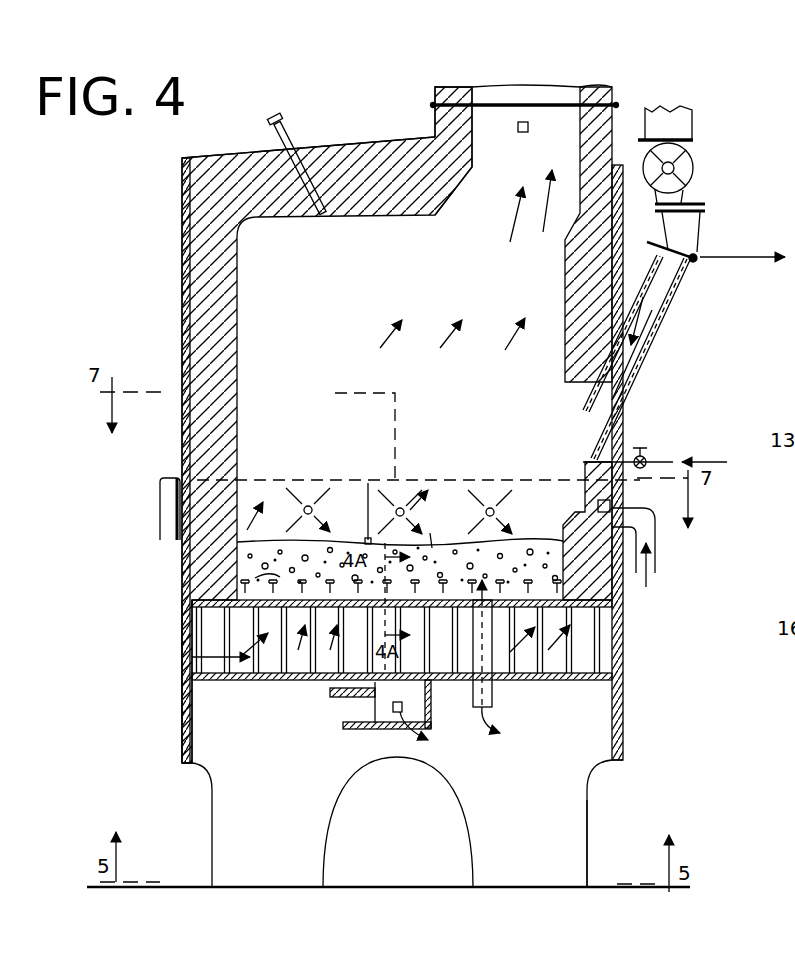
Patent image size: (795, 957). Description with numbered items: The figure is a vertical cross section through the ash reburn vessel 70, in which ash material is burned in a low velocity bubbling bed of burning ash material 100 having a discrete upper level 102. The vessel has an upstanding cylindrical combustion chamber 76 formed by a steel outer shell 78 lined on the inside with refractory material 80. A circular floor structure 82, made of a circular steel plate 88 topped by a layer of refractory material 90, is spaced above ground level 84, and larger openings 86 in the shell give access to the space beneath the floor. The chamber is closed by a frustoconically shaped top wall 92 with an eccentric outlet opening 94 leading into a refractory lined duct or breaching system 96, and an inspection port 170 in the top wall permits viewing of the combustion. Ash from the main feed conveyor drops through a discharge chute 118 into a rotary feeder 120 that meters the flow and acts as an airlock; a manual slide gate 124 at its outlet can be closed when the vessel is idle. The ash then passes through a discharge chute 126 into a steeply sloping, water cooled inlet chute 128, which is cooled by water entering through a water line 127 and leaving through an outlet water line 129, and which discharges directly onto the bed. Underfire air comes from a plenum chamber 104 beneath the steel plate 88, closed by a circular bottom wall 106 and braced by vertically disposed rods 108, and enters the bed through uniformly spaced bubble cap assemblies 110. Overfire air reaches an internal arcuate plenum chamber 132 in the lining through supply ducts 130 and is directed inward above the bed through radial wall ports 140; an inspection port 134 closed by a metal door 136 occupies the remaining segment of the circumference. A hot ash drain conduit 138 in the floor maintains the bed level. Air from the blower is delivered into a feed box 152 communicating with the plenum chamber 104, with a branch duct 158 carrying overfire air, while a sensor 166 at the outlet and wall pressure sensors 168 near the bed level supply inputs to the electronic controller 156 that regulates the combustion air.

The ash reburn vessel 70 is at (415, 866).
The combustion chamber 76 is at (278, 325).
The steel outer shell 78 is at (287, 750).
The refractory material 80 is at (213, 270).
The floor structure 82 is at (287, 578).
The ground level 84 is at (547, 885).
The openings 86 is at (212, 835).
The circular steel plate 88 is at (612, 592).
The layer of refractory material 90 is at (255, 578).
The top wall 92 is at (278, 190).
The outlet opening 94 is at (473, 170).
The duct or breaching system 96 is at (432, 105).
The bubbling bed of burning ash material 100 is at (250, 553).
The upper level 102 is at (430, 533).
The plenum chamber 104 is at (195, 668).
The circular bottom wall 106 is at (585, 690).
The rods 108 is at (270, 660).
The bubble cap assemblies 110 is at (453, 583).
The discharge chute 118 is at (673, 125).
The rotary feeder 120 is at (688, 167).
The manual slide gate 124 is at (706, 211).
The discharge chute 126 is at (703, 247).
The water line 127 is at (642, 455).
The inlet chute 128 is at (648, 357).
The outlet water line 129 is at (700, 262).
The supply ducts 130 is at (657, 545).
The arcuate plenum chamber 132 is at (575, 447).
The inspection port 134 is at (237, 482).
The metal door 136 is at (160, 502).
The hot ash drain conduit 138 is at (493, 667).
The radial wall ports 140 is at (312, 506).
The feed box 152 is at (332, 692).
The electronic controller 156 is at (431, 736).
The branch duct 158 is at (362, 729).
The sensor 166 is at (517, 128).
The wall pressure sensors 168 is at (648, 500).
The inspection port 170 is at (293, 132).